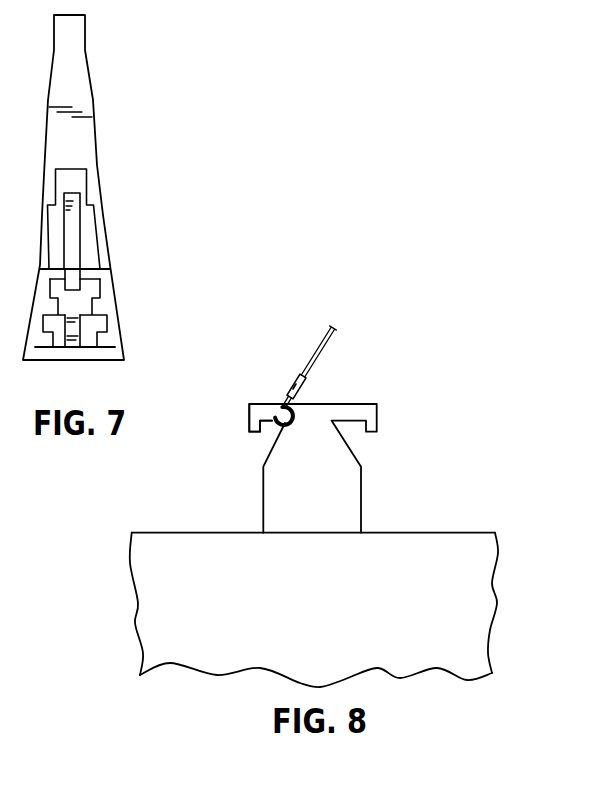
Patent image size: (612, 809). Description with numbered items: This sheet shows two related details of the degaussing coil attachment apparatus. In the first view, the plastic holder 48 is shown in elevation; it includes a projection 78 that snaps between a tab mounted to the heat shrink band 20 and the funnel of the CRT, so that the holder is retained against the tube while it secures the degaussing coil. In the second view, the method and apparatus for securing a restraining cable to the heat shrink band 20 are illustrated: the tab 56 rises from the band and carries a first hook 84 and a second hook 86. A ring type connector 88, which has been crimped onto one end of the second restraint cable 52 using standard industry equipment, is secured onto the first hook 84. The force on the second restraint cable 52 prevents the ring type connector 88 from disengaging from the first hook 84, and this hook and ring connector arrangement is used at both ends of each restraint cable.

In FIG. 7, the plastic holder 48 is at (87, 141).
In FIG. 7, the projection 78 is at (68, 349).
In FIG. 8, the heat shrink band 20 is at (475, 618).
In FIG. 8, the tab 56 is at (355, 495).
In FIG. 8, the second hook 86 is at (366, 411).
In FIG. 8, the first hook 84 is at (250, 416).
In FIG. 8, the second restraint cable 52 is at (334, 338).
In FIG. 8, the ring type connector 88 is at (297, 379).